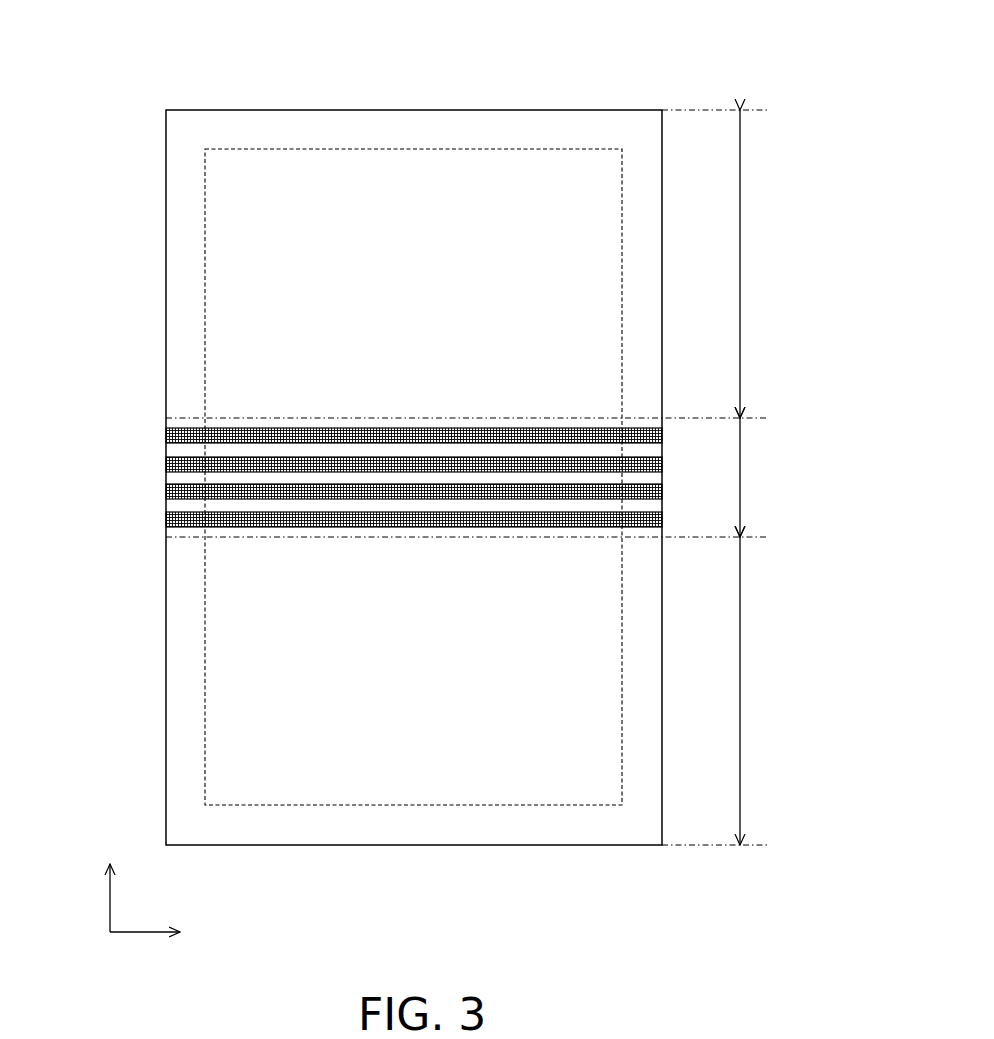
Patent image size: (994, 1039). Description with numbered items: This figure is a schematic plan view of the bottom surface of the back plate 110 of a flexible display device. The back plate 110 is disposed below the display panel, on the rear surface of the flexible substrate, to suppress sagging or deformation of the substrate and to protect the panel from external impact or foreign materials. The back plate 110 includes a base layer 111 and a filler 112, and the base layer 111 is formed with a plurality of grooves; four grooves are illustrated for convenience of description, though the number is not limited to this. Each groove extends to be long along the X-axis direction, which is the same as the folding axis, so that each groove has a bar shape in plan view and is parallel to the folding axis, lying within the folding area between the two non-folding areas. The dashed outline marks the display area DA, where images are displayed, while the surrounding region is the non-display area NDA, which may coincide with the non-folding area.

The back plate 110 is at (646, 46).
The base layer 111 is at (165, 373).
The filler 112 is at (175, 432).
The display area DA is at (235, 246).
The non-display area NDA is at (187, 295).